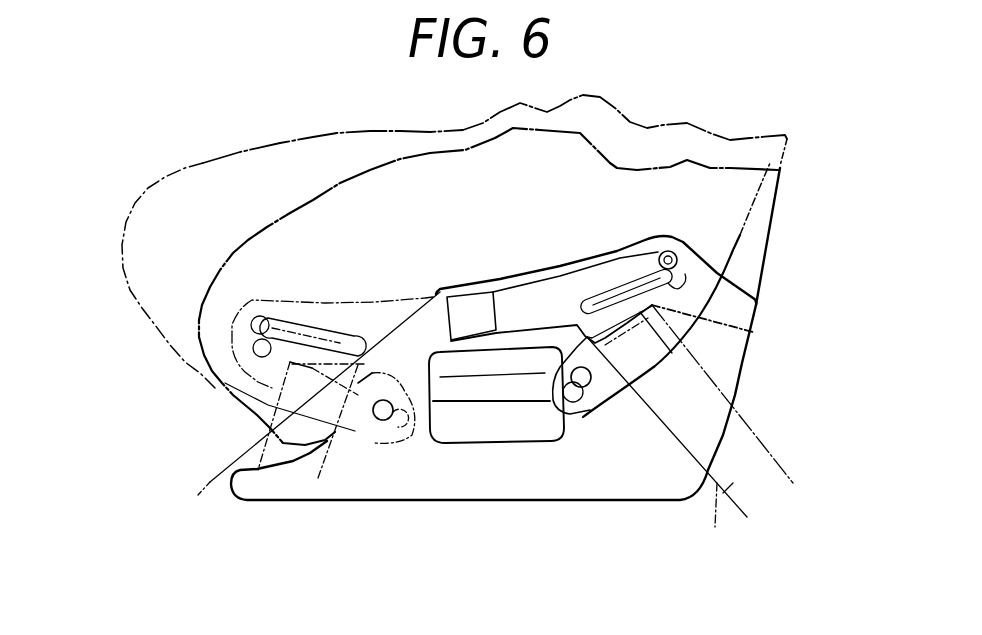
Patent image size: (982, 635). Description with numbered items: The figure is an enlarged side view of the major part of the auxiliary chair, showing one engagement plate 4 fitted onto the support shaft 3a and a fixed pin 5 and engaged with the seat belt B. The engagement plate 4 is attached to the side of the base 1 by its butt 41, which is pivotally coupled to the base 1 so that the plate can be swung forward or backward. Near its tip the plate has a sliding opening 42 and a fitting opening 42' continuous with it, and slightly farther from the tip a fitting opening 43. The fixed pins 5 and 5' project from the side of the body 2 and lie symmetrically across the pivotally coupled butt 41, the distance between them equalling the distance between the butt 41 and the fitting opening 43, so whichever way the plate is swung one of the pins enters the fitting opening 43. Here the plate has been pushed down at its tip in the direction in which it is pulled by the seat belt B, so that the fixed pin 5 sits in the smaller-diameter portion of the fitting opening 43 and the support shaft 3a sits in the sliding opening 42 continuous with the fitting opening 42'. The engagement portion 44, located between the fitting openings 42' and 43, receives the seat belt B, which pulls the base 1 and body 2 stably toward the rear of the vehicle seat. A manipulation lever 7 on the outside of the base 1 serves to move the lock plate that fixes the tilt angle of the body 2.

The base 1 is at (355, 508).
The body 2 is at (305, 192).
The support shaft 3a is at (675, 252).
The engagement plate 4 is at (545, 297).
The butt 41 is at (470, 300).
The sliding opening 42 is at (626, 261).
The fitting opening 42' is at (735, 270).
The fitting opening 43 is at (588, 417).
The engagement portion 44 is at (743, 372).
The fixed pin 5 is at (602, 406).
The fixed pin 5' is at (332, 394).
The manipulation lever 7 is at (510, 427).
The seat belt B is at (721, 522).